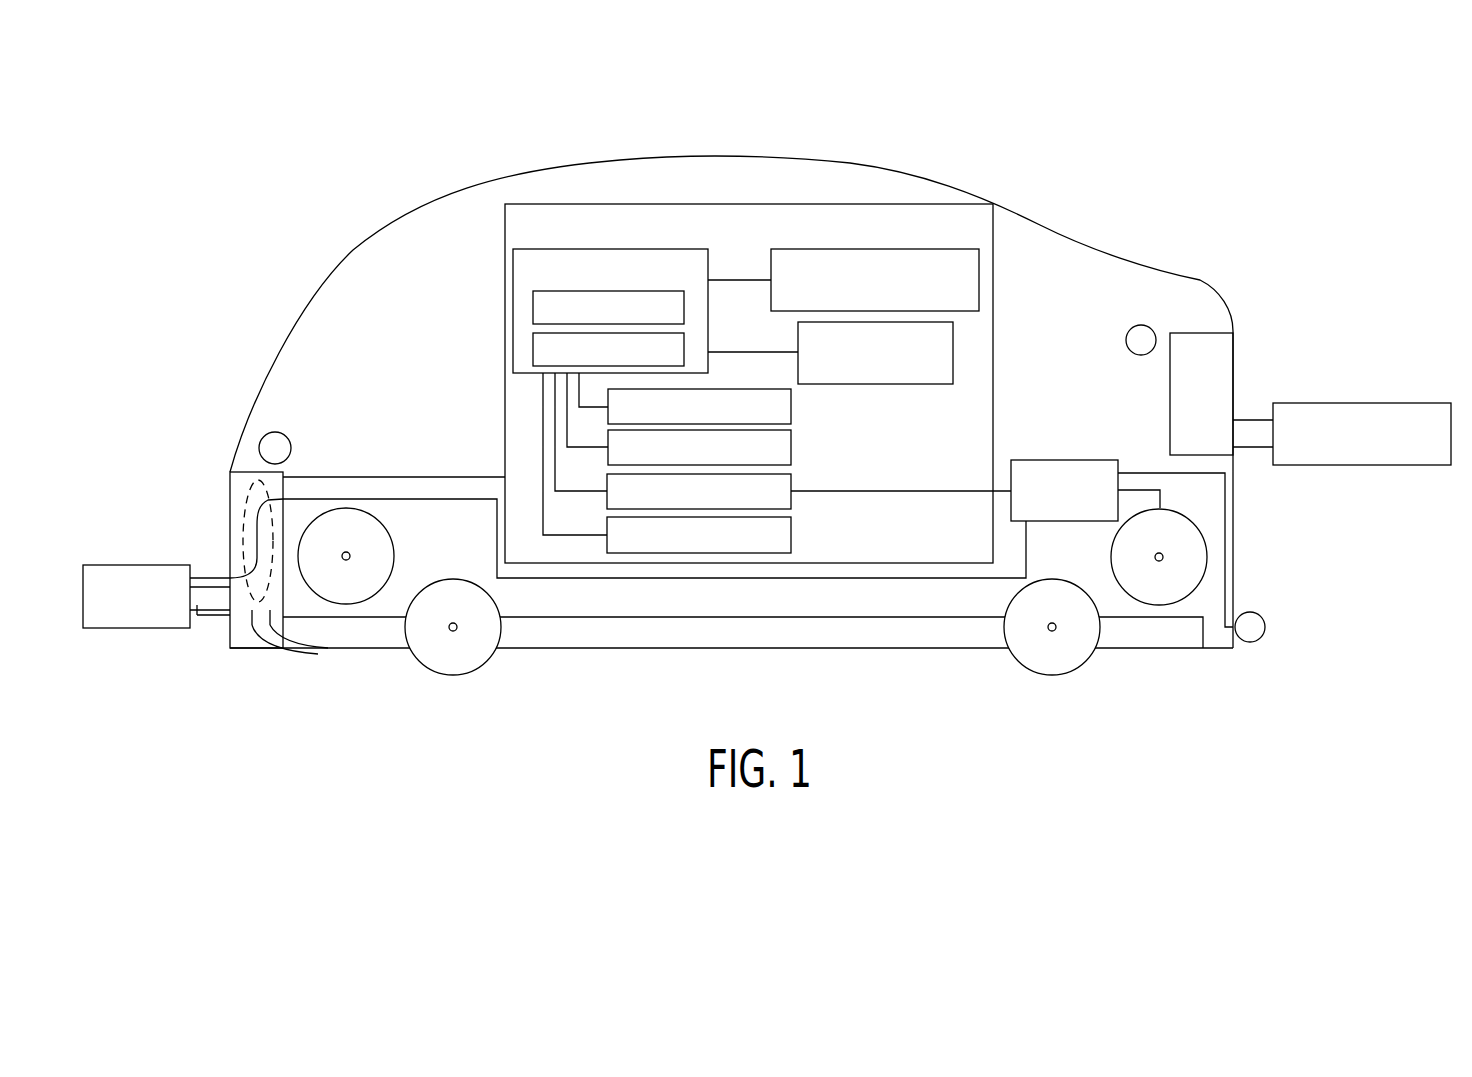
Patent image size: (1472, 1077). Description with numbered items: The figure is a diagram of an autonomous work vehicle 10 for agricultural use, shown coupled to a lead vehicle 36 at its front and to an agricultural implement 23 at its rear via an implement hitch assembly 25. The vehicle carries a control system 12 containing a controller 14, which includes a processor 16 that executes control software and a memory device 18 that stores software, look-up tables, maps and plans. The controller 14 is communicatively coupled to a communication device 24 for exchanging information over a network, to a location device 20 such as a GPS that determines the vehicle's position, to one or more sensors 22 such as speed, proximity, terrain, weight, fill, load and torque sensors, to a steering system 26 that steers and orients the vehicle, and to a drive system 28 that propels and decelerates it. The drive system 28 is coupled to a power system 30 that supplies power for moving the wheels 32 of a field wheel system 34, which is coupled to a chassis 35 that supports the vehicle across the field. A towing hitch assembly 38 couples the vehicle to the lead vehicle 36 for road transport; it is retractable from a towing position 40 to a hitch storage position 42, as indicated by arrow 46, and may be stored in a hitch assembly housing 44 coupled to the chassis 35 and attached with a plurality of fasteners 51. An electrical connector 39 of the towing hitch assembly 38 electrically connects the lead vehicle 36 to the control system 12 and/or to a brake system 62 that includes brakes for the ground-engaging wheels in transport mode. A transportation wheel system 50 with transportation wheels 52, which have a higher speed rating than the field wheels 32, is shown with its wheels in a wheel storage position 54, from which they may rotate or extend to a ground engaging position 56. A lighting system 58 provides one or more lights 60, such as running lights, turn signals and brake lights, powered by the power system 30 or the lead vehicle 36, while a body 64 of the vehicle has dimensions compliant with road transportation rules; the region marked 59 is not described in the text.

The autonomous work vehicle 10 is at (375, 182).
The control system 12 is at (749, 202).
The controller 14 is at (510, 280).
The processor 16 is at (533, 307).
The memory device 18 is at (533, 348).
The location device 20 is at (953, 352).
The sensors 22 is at (791, 419).
The agricultural implement 23 is at (1319, 403).
The communication device 24 is at (875, 248).
The implement hitch assembly 25 is at (1260, 376).
The steering system 26 is at (791, 456).
The drive system 28 is at (791, 484).
The power system 30 is at (791, 535).
The field wheels 32 is at (502, 627).
The field wheel system 34 is at (470, 681).
The chassis 35 is at (790, 648).
The lead vehicle 36 is at (118, 565).
The towing hitch assembly 38 is at (198, 612).
The electrical connector 39 is at (198, 577).
The towing position 40 is at (204, 625).
The hitch storage position 42 is at (273, 492).
The hitch assembly housing 44 is at (230, 482).
The arrow 46 is at (222, 532).
The transportation wheel system 50 is at (374, 714).
The fasteners 51 is at (294, 647).
The transportation wheels 52 is at (346, 508).
The wheel storage position 54 is at (393, 527).
The ground engaging position 56 is at (1228, 670).
The lighting system 58 is at (300, 391).
The cabin region 59 is at (1143, 452).
The lights 60 is at (285, 433).
The brake system 62 is at (1093, 460).
The body 64 is at (1072, 235).